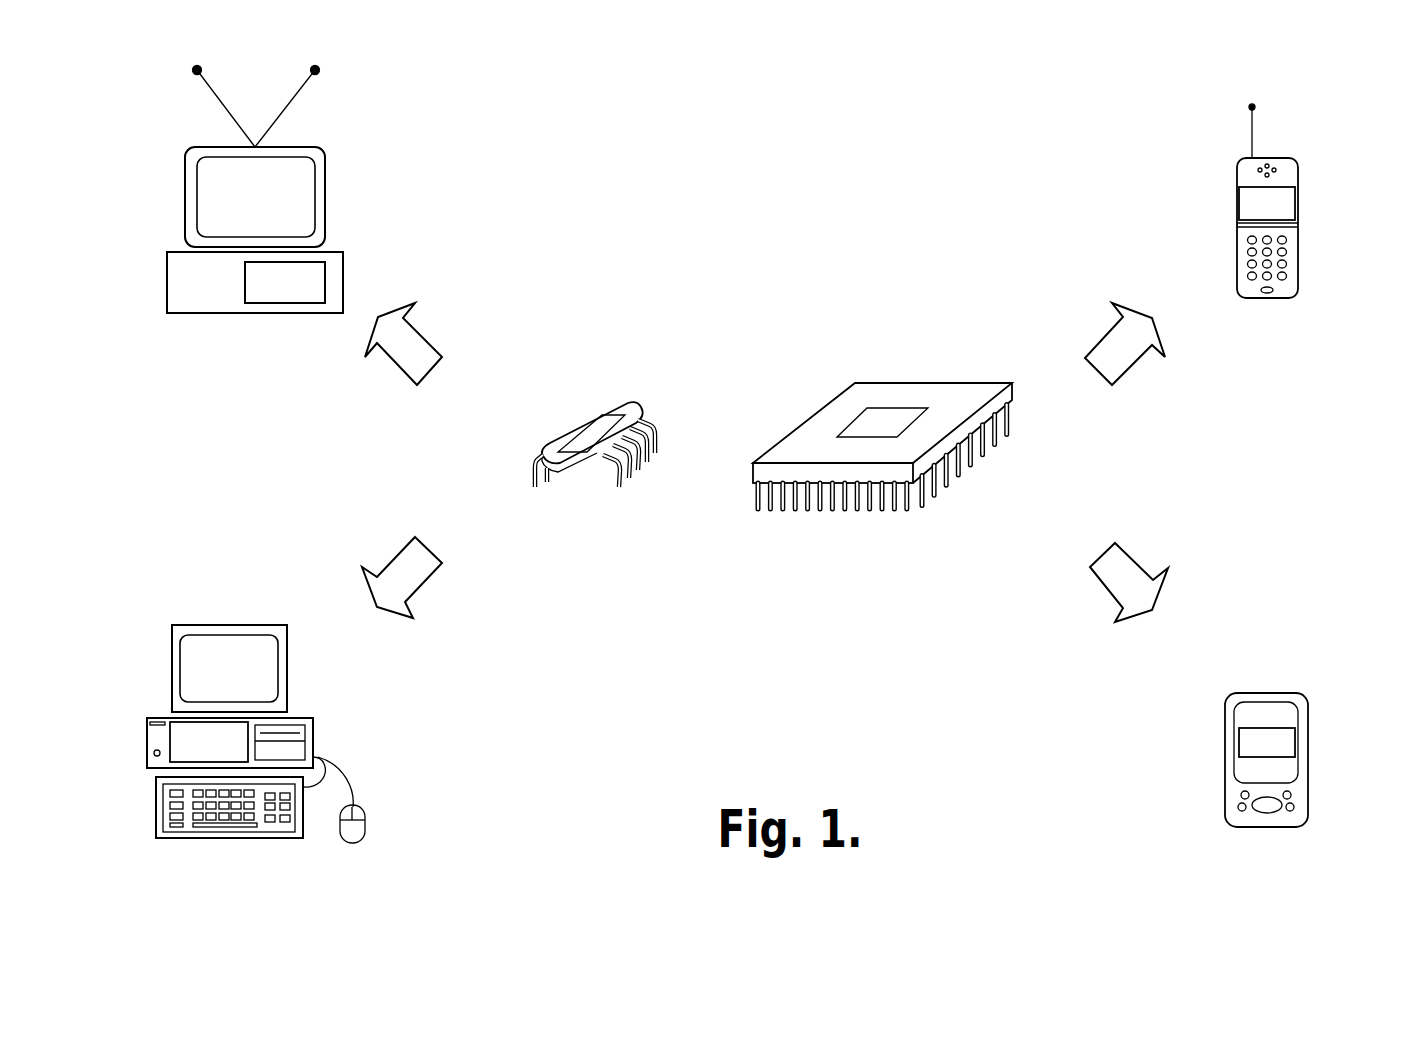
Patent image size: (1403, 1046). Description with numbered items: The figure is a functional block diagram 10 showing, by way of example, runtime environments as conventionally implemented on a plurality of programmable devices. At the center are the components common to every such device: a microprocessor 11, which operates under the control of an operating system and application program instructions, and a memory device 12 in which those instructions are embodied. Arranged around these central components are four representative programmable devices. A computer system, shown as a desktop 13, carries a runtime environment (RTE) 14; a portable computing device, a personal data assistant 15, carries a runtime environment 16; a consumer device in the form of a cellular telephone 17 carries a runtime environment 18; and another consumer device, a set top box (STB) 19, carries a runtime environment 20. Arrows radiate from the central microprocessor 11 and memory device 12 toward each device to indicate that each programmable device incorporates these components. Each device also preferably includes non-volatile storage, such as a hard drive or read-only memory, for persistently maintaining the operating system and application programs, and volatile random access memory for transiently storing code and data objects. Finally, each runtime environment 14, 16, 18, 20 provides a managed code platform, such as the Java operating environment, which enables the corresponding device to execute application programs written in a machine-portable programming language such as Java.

The functional block diagram 10 is at (99, 134).
The microprocessor 11 is at (922, 383).
The memory device 12 is at (615, 400).
The desktop computer system 13 is at (313, 730).
The runtime environment 14 is at (170, 737).
The personal data assistant 15 is at (1225, 805).
The runtime environment 16 is at (1297, 742).
The cellular telephone 17 is at (1237, 265).
The runtime environment 18 is at (1297, 207).
The set top box 19 is at (343, 268).
The runtime environment 20 is at (280, 303).